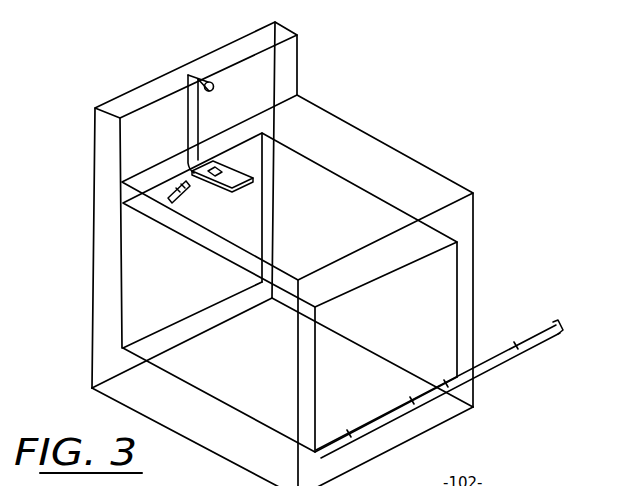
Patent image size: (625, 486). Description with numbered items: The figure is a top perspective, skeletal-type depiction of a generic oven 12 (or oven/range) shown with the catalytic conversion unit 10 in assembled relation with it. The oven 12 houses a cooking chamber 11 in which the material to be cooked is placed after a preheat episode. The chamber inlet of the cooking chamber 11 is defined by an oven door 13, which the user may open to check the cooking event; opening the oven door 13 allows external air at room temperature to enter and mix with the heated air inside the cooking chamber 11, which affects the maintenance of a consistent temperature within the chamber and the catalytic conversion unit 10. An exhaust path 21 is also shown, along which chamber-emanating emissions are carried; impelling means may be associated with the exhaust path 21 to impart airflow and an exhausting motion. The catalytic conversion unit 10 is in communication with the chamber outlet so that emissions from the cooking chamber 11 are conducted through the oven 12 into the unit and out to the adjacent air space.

The catalytic conversion unit 10 is at (227, 184).
The cooking chamber 11 is at (402, 298).
The oven 12 is at (425, 173).
The oven door 13 is at (549, 325).
The exhaust path 21 is at (187, 128).